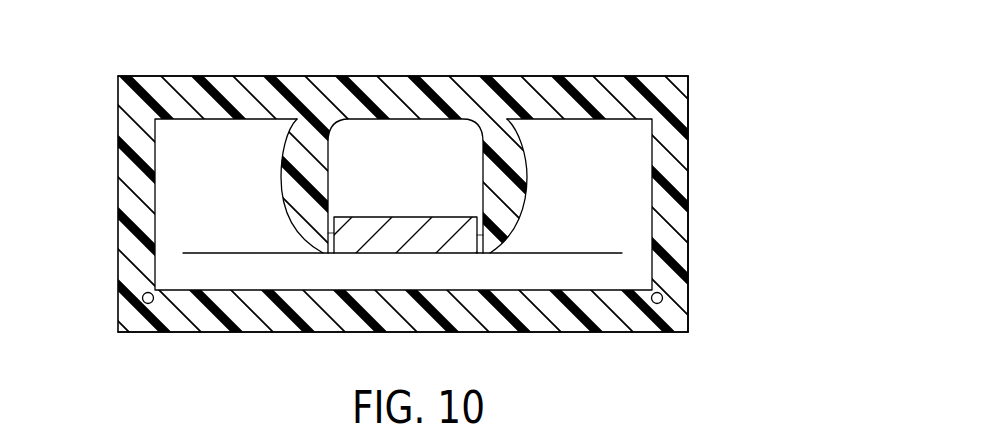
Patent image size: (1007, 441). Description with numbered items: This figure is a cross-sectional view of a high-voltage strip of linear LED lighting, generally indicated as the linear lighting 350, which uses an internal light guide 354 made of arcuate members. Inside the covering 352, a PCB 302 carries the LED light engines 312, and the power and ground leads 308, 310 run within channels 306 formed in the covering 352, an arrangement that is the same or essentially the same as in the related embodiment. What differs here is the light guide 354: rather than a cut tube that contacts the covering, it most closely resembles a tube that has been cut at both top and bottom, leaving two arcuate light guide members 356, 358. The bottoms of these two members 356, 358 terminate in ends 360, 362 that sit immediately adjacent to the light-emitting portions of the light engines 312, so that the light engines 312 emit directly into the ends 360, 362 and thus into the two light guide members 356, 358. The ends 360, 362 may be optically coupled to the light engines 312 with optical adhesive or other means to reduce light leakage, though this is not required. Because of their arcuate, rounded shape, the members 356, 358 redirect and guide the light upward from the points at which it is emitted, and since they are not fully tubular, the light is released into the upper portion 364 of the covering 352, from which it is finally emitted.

The PCB 302 is at (590, 253).
The channels 306 is at (151, 303).
The power lead 308 is at (142, 293).
The ground lead 310 is at (662, 295).
The LED light engine 312 is at (402, 223).
The linear lighting 350 is at (503, 181).
The covering 352 is at (685, 157).
The light guide 354 is at (398, 186).
The first arcuate light guide member 356 is at (284, 192).
The second arcuate light guide member 358 is at (526, 176).
The end of first light guide member 360 is at (337, 233).
The end of second light guide member 362 is at (467, 235).
The upper portion of the covering 364 is at (437, 82).